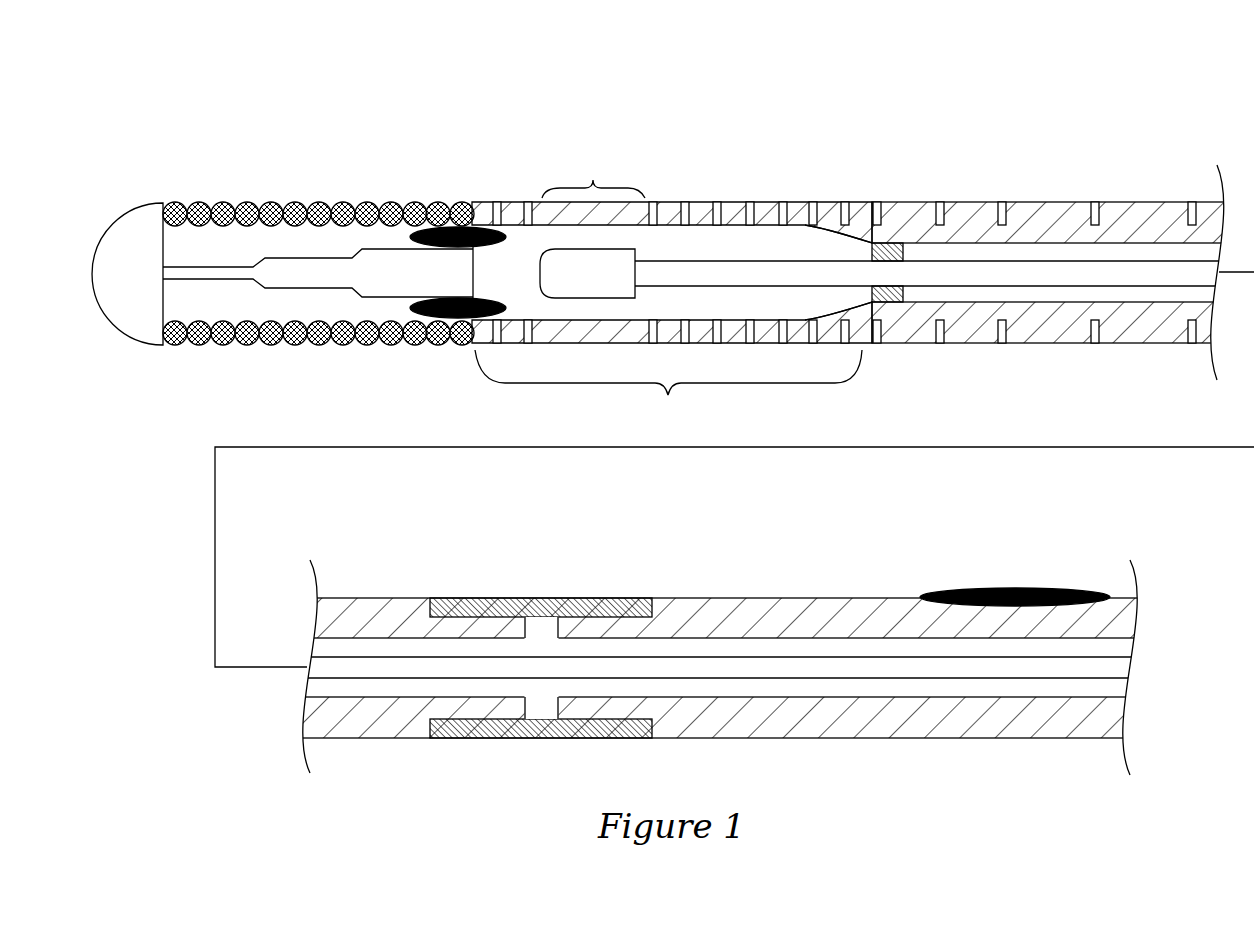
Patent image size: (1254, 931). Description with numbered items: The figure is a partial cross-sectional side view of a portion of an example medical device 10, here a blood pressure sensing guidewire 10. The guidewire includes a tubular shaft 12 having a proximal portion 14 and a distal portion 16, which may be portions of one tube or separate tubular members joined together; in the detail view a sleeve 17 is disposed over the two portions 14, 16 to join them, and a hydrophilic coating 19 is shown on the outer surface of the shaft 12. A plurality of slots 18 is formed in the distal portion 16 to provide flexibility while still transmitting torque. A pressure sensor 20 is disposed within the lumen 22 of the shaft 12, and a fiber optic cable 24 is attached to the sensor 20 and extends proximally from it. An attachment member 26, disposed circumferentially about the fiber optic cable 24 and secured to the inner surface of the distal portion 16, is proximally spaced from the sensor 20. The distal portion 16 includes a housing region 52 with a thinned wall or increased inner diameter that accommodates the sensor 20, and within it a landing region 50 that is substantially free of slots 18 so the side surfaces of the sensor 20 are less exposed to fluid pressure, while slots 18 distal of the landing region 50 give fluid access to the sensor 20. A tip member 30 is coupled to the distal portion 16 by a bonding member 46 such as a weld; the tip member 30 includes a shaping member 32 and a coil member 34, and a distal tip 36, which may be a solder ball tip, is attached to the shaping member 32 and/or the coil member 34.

The medical device 10 is at (850, 95).
The shaft 12 is at (1140, 200).
The proximal portion 14 is at (838, 598).
The distal portion 16 is at (1042, 202).
The sleeve 17 is at (540, 598).
The slots 18 is at (688, 220).
The hydrophilic coating 19 is at (1012, 590).
The pressure sensor 20 is at (573, 282).
The lumen 22 is at (768, 238).
The fiber optic cable 24 is at (1057, 277).
The attachment member 26 is at (887, 245).
The tip member 30 is at (238, 198).
The shaping member 32 is at (298, 275).
The coil member 34 is at (317, 215).
The distal tip 36 is at (143, 218).
The bonding member 46 is at (500, 222).
The landing region 50 is at (593, 180).
The housing region 52 is at (668, 388).